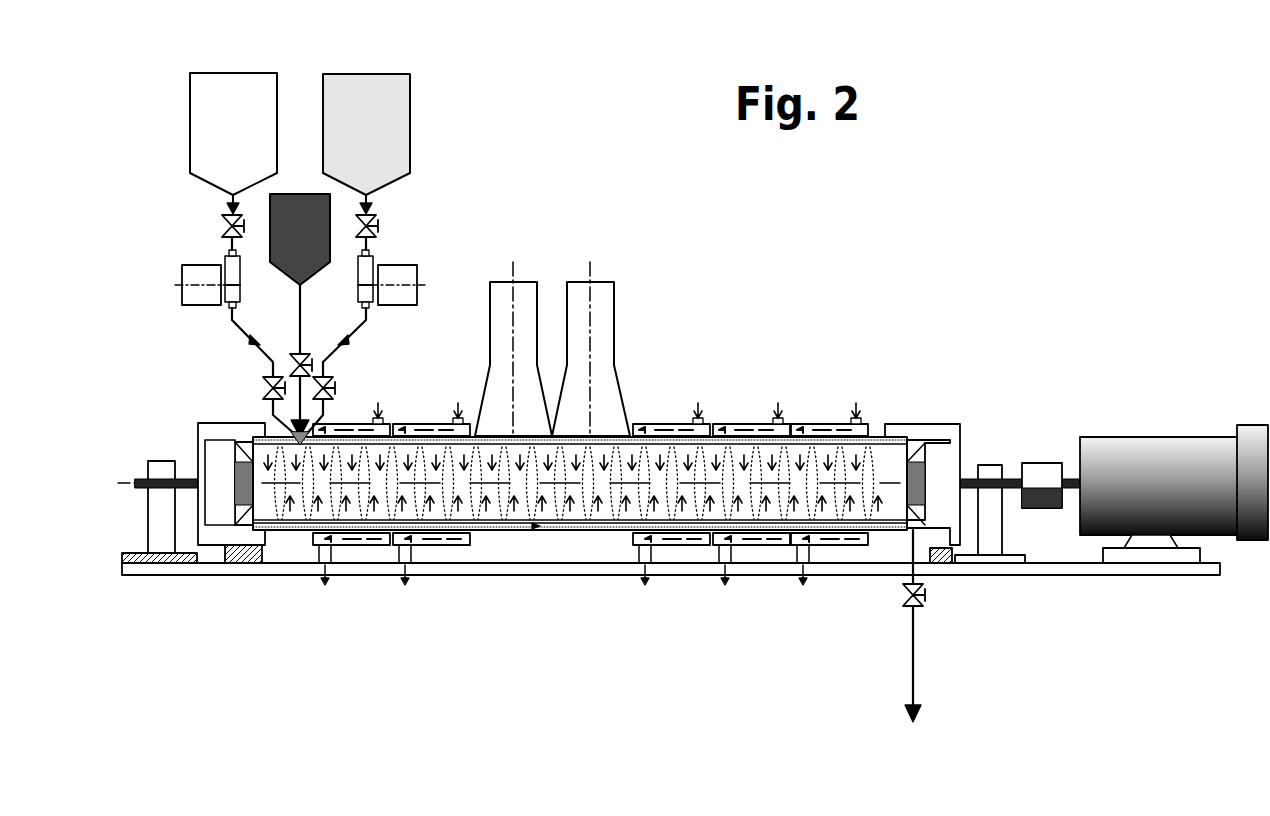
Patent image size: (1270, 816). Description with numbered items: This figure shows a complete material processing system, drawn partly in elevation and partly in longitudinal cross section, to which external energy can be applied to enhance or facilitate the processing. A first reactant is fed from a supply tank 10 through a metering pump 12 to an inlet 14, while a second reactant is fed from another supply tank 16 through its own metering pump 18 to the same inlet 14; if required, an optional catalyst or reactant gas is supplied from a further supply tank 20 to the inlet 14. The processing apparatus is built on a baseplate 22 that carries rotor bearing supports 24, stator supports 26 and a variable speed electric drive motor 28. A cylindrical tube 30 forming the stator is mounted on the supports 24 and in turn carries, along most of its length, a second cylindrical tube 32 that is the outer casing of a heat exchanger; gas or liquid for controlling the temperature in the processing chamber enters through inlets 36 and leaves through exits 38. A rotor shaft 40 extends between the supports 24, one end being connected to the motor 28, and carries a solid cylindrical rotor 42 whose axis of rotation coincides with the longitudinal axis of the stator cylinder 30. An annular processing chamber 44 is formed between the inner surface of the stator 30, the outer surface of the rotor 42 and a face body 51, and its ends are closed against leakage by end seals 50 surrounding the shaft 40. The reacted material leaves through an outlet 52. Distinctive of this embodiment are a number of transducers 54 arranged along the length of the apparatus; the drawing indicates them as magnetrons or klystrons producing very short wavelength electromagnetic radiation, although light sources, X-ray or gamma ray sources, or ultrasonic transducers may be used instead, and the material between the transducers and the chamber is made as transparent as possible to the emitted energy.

The supply tank 10 is at (243, 95).
The metering pump 12 is at (197, 278).
The inlet 14 is at (297, 436).
The supply tank 16 is at (392, 137).
The metering pump 18 is at (395, 282).
The supply tank 20 is at (302, 250).
The baseplate 22 is at (520, 575).
The rotor bearing supports 24 is at (148, 520).
The stator supports 26 is at (243, 548).
The variable speed electric drive motor 28 is at (1145, 455).
The cylindrical tube 30 is at (300, 532).
The cylindrical tube 32 is at (355, 547).
The inlets 36 is at (858, 403).
The exits 38 is at (805, 550).
The rotor shaft 40 is at (968, 475).
The cylindrical rotor 42 is at (875, 455).
The processing chamber 44 is at (572, 525).
The end seals 50 is at (920, 505).
The face body 51 is at (222, 452).
The outlet 52 is at (905, 602).
The transducers 54 is at (595, 338).